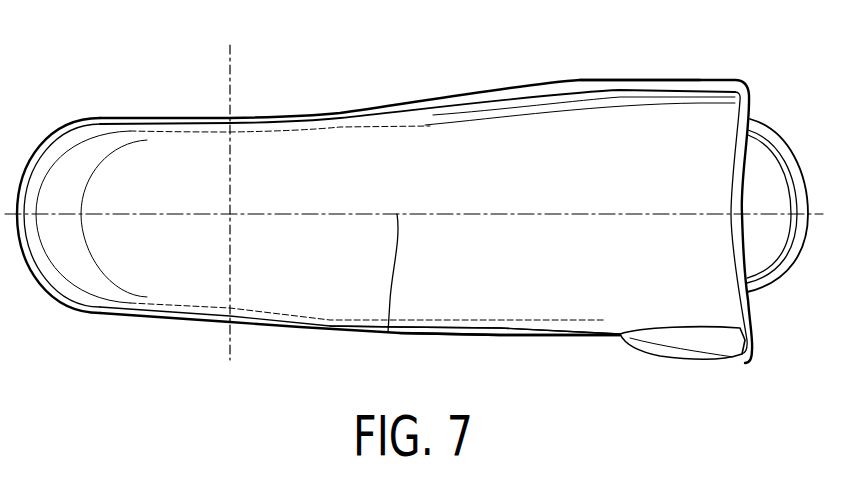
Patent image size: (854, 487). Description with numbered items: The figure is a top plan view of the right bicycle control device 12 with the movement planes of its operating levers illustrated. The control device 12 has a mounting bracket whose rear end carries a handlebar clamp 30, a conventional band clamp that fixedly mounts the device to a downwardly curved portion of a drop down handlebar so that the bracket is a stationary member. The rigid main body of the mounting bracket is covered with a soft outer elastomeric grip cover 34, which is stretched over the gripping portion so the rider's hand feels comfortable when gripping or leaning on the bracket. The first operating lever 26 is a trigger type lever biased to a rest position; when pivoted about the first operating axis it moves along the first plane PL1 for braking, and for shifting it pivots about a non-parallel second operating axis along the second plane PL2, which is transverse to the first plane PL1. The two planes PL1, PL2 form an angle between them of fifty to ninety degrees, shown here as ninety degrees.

The bicycle control device 12 is at (60, 127).
The first operating lever 26 is at (577, 80).
The handlebar clamp 30 is at (772, 128).
The grip cover 34 is at (513, 310).
The first plane PL1 is at (388, 332).
The second plane PL2 is at (230, 75).